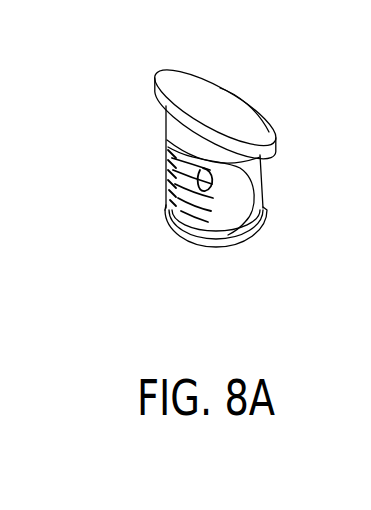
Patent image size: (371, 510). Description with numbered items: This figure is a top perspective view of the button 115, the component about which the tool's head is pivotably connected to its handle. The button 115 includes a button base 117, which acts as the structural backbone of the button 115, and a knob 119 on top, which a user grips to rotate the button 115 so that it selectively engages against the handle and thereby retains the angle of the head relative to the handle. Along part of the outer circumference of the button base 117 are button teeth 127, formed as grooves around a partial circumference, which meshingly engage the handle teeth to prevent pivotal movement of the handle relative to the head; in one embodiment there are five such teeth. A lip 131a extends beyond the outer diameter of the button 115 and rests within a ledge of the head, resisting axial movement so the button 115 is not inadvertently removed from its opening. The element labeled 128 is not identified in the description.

The button 115 is at (150, 133).
The knob 119 is at (203, 96).
The lip 131a is at (257, 104).
The button base 117 is at (256, 168).
The button teeth 127 is at (182, 189).
The base flange 128 is at (223, 203).